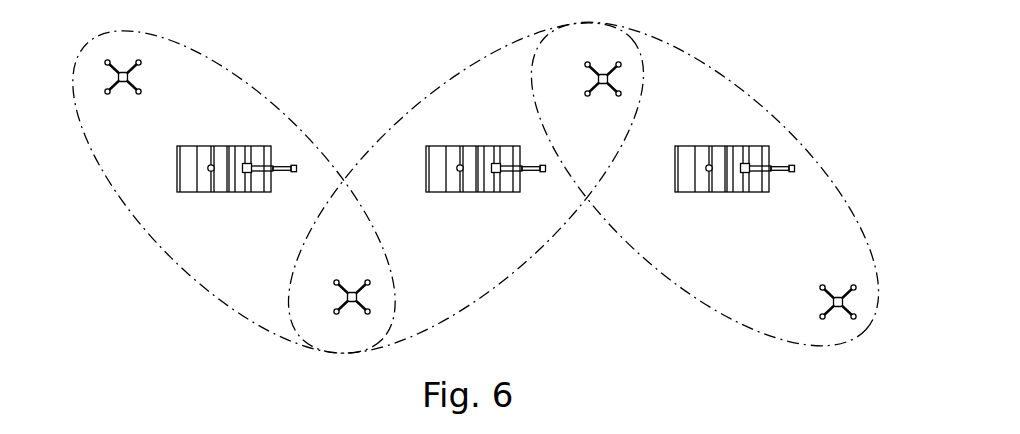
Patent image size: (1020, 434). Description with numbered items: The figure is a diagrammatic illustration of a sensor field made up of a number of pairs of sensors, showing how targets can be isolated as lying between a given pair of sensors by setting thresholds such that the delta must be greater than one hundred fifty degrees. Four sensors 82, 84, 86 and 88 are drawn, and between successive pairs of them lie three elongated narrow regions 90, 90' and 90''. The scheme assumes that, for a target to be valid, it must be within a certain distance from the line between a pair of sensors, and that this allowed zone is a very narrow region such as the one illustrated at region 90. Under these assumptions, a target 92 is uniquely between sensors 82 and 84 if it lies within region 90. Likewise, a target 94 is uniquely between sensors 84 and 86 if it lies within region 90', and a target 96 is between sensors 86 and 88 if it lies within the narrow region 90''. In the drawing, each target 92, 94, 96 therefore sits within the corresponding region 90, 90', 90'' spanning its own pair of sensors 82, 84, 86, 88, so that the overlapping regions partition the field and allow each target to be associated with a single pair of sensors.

The sensor 82 is at (130, 72).
The sensor 84 is at (338, 284).
The sensor 86 is at (590, 66).
The sensor 88 is at (824, 289).
The target 92 is at (197, 145).
The target 94 is at (450, 145).
The target 96 is at (683, 145).
The region 90 is at (234, 202).
The region 90' is at (466, 204).
The region 90'' is at (705, 200).